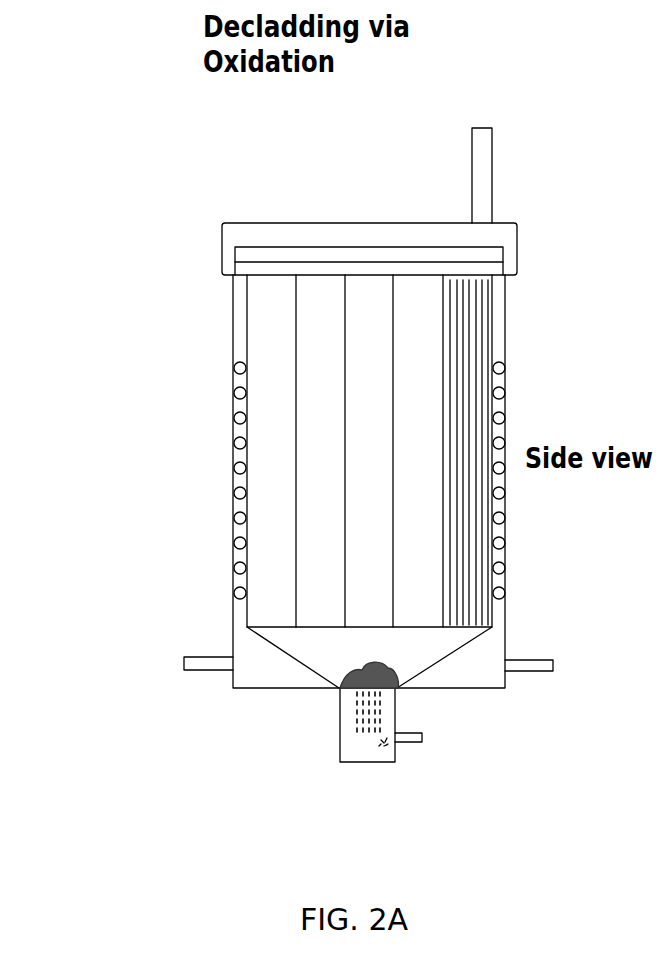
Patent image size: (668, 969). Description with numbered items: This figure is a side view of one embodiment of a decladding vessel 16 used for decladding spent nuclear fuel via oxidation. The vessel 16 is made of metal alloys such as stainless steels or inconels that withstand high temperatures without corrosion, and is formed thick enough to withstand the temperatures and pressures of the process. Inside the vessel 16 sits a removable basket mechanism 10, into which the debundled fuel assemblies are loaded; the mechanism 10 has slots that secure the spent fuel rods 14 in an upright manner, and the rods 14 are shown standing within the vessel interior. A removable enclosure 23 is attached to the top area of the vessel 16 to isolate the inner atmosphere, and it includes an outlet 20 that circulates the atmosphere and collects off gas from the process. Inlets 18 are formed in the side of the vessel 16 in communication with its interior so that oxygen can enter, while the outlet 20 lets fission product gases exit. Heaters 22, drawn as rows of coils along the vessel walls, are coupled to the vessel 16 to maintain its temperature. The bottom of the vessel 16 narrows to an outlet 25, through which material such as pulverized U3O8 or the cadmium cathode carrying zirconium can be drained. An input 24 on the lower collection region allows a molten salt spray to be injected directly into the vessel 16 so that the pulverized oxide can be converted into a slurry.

The removable basket mechanism 10 is at (310, 246).
The fuel rods 14 is at (483, 348).
The decladding vessel 16 is at (579, 135).
The inlets 18 is at (198, 655).
The outlet 20 is at (462, 168).
The heaters 22 is at (235, 467).
The removable enclosure 23 is at (517, 238).
The input 24 is at (422, 737).
The outlet 25 is at (368, 762).